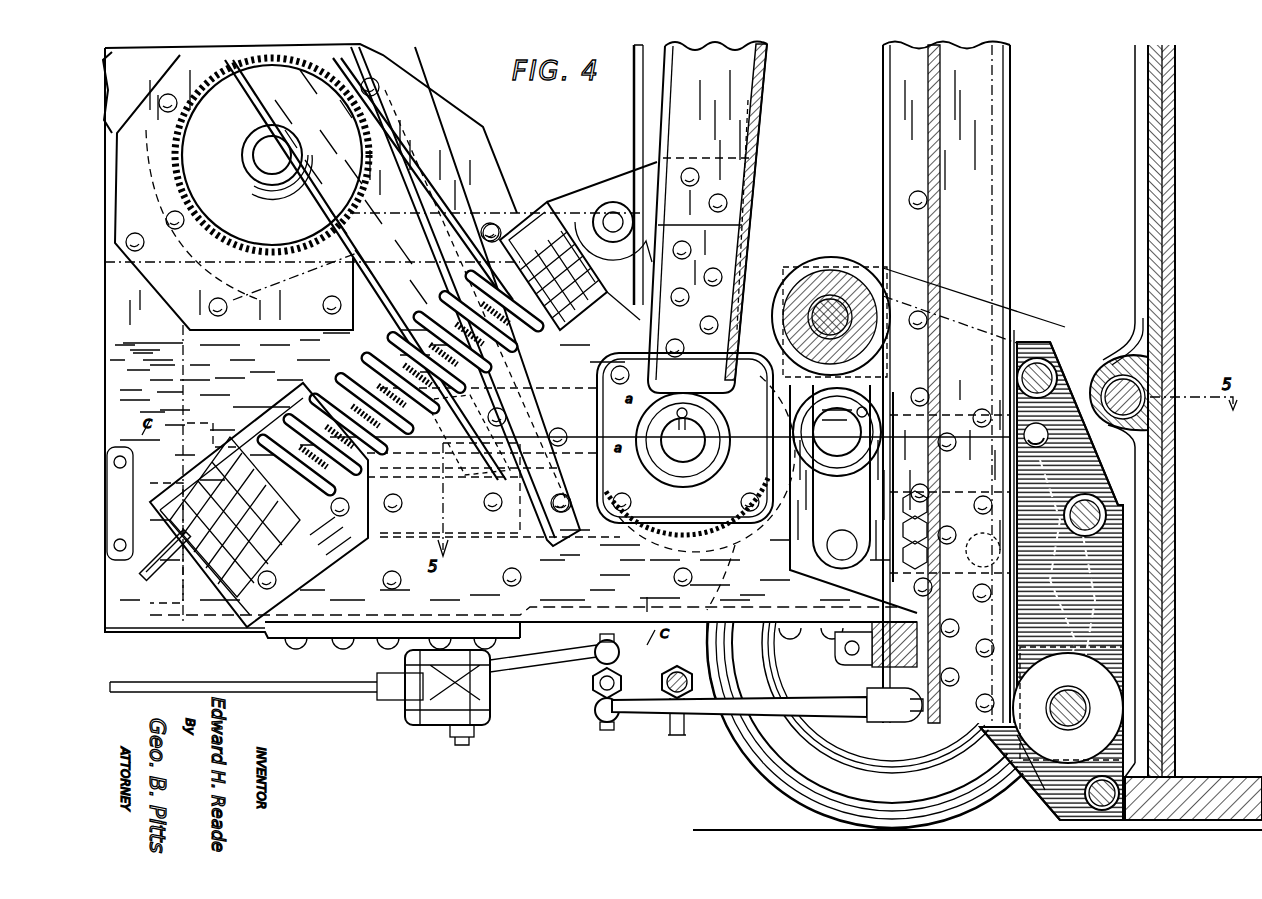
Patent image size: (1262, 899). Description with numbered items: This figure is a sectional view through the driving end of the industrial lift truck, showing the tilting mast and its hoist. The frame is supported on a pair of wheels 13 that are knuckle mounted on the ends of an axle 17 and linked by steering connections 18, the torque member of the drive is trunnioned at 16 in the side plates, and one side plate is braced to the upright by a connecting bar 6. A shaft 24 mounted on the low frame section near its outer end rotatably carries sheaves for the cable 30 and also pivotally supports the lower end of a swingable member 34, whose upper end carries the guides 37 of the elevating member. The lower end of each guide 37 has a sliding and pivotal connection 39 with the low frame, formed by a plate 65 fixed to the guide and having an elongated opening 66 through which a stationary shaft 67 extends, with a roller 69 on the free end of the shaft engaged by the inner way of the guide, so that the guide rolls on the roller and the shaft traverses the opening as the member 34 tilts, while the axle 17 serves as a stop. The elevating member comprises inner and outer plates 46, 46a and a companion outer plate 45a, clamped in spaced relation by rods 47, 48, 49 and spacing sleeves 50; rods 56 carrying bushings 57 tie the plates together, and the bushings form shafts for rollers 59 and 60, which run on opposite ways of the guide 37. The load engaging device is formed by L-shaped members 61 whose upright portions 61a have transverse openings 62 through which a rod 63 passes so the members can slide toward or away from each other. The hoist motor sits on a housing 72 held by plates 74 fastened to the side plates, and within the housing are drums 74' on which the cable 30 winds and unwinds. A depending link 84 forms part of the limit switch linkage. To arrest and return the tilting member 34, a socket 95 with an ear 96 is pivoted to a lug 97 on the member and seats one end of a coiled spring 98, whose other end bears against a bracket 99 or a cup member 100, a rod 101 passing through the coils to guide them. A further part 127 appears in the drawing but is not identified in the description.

The connecting bar 6 is at (432, 222).
The wheels 13 is at (758, 766).
The trunnion 16 is at (256, 624).
The axle 17 is at (858, 668).
The steering connections 18 is at (650, 718).
The shaft 24 is at (672, 465).
The flexible member 30 is at (755, 232).
The swingable member 34 is at (745, 82).
The guide 37 is at (1010, 222).
The connection 39 is at (740, 548).
The outer plate 45a is at (1123, 560).
The inner plate 46 is at (1148, 483).
The outer plate 46a is at (1020, 777).
The rod 47 is at (1045, 340).
The rod 48 is at (1107, 520).
The rod 49 is at (1160, 780).
The sleeve 50 is at (1060, 360).
The rod 56 is at (845, 285).
The bushing 57 is at (1110, 710).
The roller 59 is at (1005, 745).
The roller 60 is at (830, 260).
The L-shaped member 61 is at (1215, 810).
The upright portion 61a is at (1155, 600).
The transverse opening 62 is at (1150, 360).
The rod 63 is at (1150, 387).
The plate 65 is at (800, 575).
The elongated opening 66 is at (815, 545).
The shaft 67 is at (840, 420).
The roller 69 is at (840, 490).
The housing 72 is at (311, 128).
The plate 74 is at (308, 207).
The drum 74' is at (272, 170).
The link 84 is at (634, 130).
The socket 95 is at (545, 202).
The ear 96 is at (608, 200).
The lug 97 is at (632, 172).
The coiled spring 98 is at (360, 362).
The bracket 99 is at (214, 630).
The cup member 100 is at (272, 530).
The rod 101 is at (145, 578).
The pin 127 is at (677, 412).